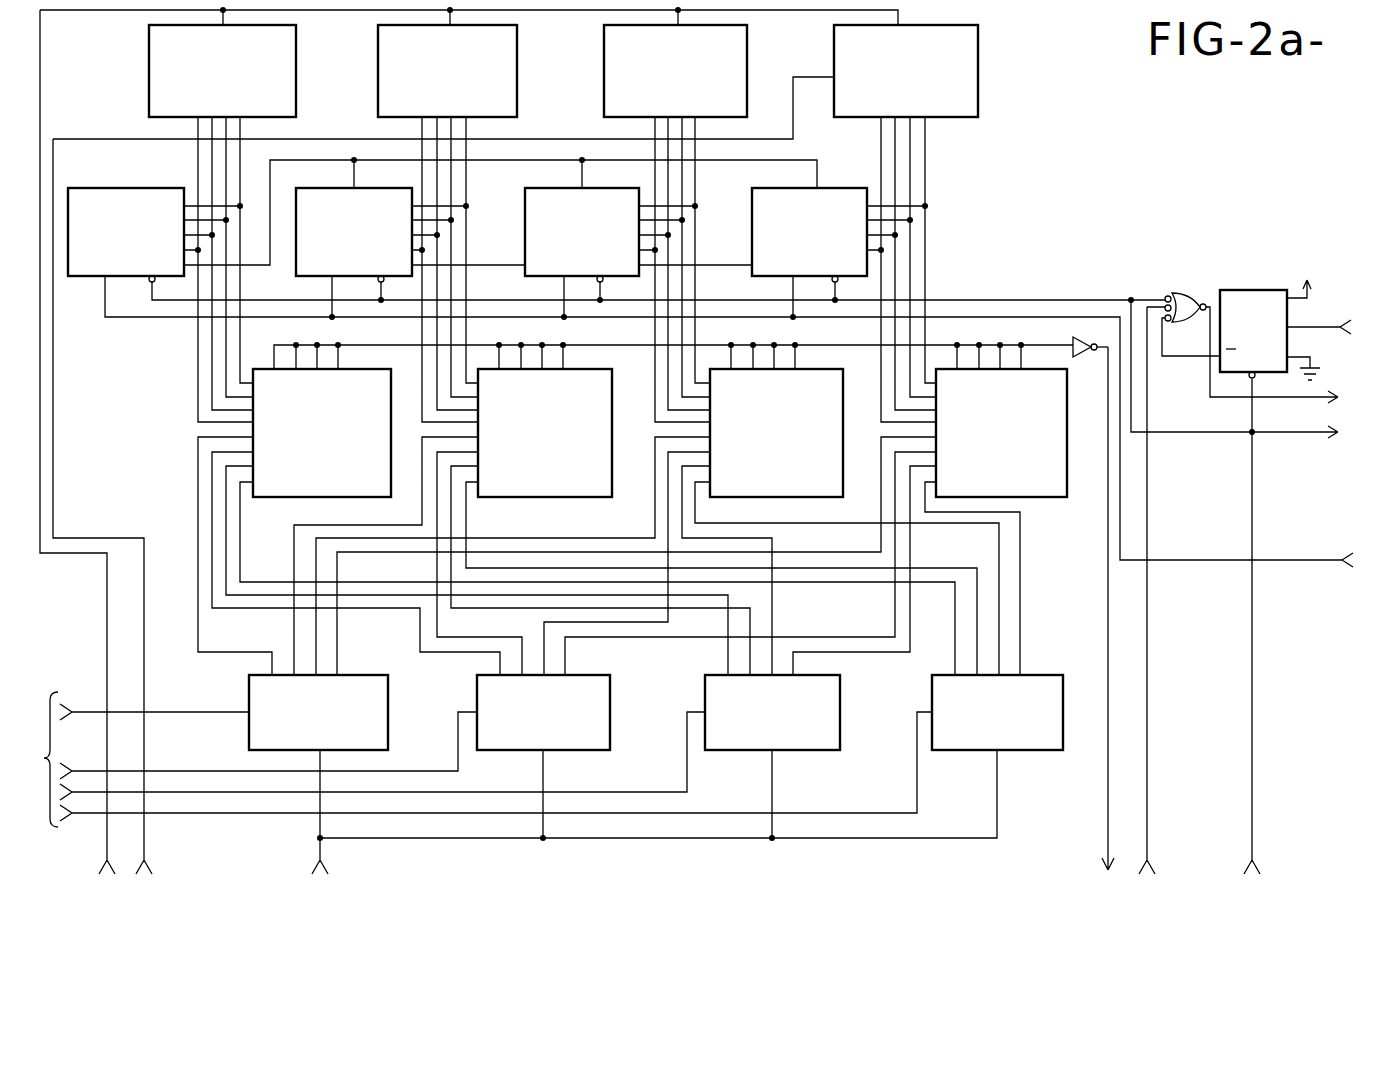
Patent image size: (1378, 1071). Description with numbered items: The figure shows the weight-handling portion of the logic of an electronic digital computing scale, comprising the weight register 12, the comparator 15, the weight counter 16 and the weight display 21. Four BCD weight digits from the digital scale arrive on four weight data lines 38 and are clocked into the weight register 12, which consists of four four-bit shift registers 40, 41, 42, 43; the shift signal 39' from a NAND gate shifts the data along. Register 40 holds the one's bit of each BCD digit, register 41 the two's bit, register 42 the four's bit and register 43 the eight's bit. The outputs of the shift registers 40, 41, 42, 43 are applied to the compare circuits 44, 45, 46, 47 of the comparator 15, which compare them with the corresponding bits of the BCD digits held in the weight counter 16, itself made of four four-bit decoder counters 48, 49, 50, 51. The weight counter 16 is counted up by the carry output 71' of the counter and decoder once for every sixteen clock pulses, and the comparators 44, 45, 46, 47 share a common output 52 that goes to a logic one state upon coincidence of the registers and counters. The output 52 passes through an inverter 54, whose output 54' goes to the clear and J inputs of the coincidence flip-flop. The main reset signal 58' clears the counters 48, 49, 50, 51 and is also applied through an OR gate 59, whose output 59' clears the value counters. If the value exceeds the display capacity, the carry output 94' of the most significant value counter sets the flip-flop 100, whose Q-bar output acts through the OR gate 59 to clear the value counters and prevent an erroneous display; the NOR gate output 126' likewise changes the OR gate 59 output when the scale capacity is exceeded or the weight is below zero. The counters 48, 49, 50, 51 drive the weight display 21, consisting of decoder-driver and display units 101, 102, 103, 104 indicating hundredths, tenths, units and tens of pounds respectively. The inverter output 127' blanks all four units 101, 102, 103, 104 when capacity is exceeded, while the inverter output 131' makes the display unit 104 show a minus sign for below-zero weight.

The weight register 12 is at (207, 695).
The comparator 15 is at (162, 443).
The weight counter 16 is at (972, 238).
The weight display 21 is at (1046, 92).
The weight data lines 38 is at (48, 735).
The output of NAND gate 39 39' is at (654, 816).
The 4-bit shift register 40 is at (388, 682).
The 4-bit shift register 41 is at (610, 684).
The 4-bit shift register 42 is at (840, 688).
The 4-bit shift register 43 is at (1034, 680).
The compare circuit 44 is at (306, 499).
The compare circuit 45 is at (545, 499).
The compare circuit 46 is at (770, 499).
The compare circuit 47 is at (1038, 499).
The 4-bit decoder counter 48 is at (99, 281).
The 4-bit decoder counter 49 is at (303, 281).
The 4-bit decoder counter 50 is at (527, 281).
The 4-bit decoder counter 51 is at (759, 281).
The common output 52 is at (858, 347).
The inverter 54 is at (1072, 343).
The output of inverter 54 54' is at (1077, 608).
The output of inverter 58 58' is at (743, 575).
The OR gate 59 is at (1190, 292).
The output of OR gate 59 59' is at (1272, 366).
The carry output of counter and decoder 71 71' is at (729, 437).
The carry output of value counter 94 94' is at (1319, 317).
The flip-flop 100 is at (1262, 270).
The decoder-driver and display unit 101 is at (296, 50).
The decoder-driver and display unit 102 is at (525, 45).
The decoder-driver and display unit 103 is at (747, 50).
The decoder-driver and display unit 104 is at (978, 44).
The output of NOR gate 126 126' is at (1173, 590).
The output of inverter 127 127' is at (71, 442).
The output of inverter 131 131' is at (443, 475).